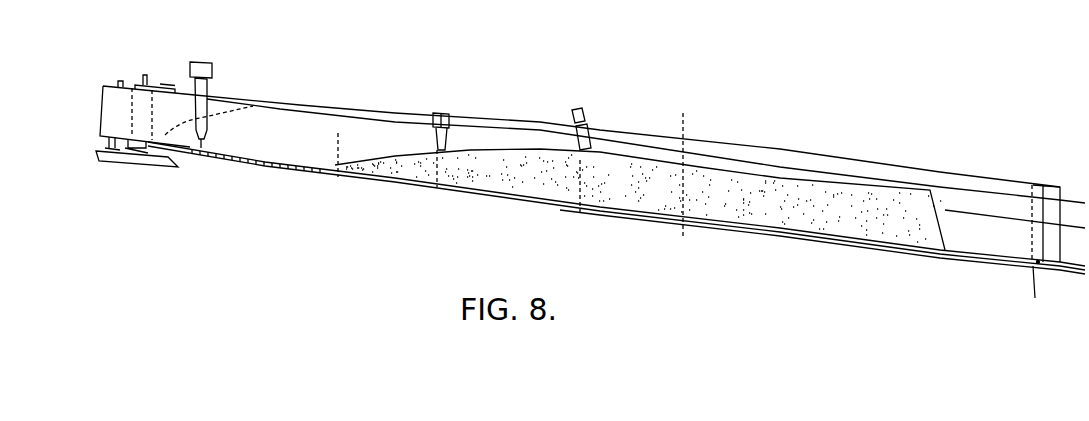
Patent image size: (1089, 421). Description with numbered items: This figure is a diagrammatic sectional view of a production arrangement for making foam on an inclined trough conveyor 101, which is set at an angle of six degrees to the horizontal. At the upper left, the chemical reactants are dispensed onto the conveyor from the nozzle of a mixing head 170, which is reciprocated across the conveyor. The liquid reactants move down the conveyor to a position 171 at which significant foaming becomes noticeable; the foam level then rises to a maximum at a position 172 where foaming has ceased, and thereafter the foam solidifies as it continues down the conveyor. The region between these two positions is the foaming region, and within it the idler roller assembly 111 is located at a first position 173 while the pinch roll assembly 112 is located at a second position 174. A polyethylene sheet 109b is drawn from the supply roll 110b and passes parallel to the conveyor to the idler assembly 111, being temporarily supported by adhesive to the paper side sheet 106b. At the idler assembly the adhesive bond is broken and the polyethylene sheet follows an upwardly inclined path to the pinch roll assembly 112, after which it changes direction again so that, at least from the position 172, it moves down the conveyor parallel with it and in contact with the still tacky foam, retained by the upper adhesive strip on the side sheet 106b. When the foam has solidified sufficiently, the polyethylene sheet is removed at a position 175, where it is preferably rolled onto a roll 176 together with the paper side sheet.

The supply roll 110b is at (110, 117).
The side sheet 106b is at (177, 70).
The mixing head 170 is at (213, 79).
The polyethylene sheet 109b is at (253, 106).
The idler roller assembly 111 is at (444, 114).
The pinch roll assembly 112 is at (585, 118).
The conveyor 101 is at (219, 164).
The position 171 is at (335, 186).
The first position 173 is at (434, 192).
The second position 174 is at (574, 225).
The position 172 is at (669, 234).
The roll 176 is at (1047, 186).
The position 175 is at (1033, 265).